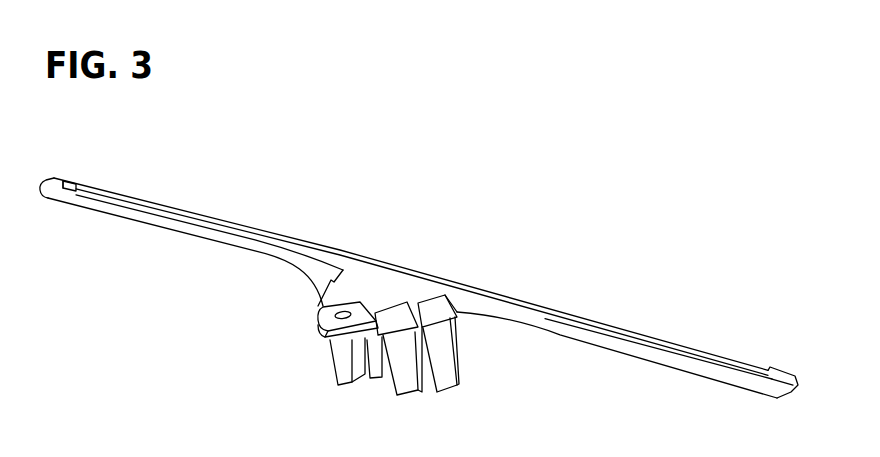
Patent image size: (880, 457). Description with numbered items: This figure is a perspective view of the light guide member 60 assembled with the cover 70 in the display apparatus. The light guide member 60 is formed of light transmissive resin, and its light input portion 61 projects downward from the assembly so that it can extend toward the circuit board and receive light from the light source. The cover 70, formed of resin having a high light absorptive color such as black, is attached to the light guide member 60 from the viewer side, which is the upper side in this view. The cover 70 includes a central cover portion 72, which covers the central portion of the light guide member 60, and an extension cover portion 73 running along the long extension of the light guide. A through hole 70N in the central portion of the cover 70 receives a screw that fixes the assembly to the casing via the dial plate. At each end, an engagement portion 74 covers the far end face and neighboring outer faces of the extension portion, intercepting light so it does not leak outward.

The light guide member 60 is at (614, 324).
The light input portion 61 is at (343, 374).
The cover 70 is at (597, 343).
The through hole 70N is at (315, 338).
The central cover portion 72 is at (383, 282).
The extension cover portion 73 is at (170, 225).
The engagement portion 74 is at (67, 181).